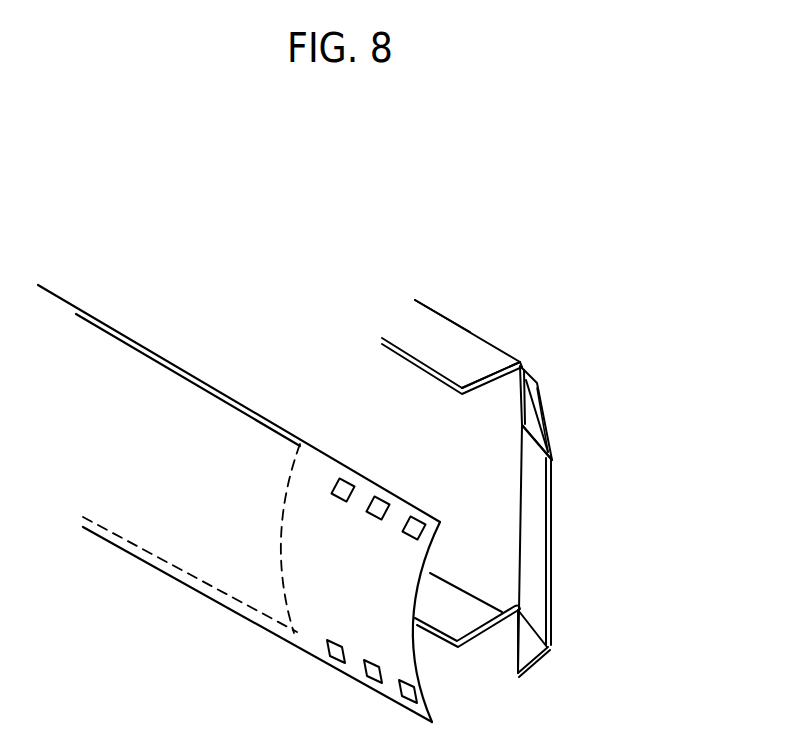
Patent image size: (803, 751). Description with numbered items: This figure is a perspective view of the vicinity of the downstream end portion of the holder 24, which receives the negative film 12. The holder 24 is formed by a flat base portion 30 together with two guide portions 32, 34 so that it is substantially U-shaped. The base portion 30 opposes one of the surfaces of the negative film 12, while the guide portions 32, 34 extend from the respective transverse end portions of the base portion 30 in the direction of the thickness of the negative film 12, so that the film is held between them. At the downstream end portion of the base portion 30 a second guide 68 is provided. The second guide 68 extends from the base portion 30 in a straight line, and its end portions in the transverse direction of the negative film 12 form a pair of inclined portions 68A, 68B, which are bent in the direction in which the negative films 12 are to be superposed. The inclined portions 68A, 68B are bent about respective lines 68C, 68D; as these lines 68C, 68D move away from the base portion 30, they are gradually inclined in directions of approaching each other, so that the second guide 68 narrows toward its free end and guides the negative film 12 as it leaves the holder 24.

The negative film 12 is at (323, 662).
The holder 24 is at (505, 333).
The base portion 30 is at (440, 413).
The guide portion 32 is at (434, 330).
The guide portion 34 is at (468, 613).
The second guide 68 is at (553, 538).
The inclined portion 68A is at (542, 403).
The inclined portion 68B is at (533, 652).
The line 68C is at (540, 435).
The line 68D is at (528, 623).